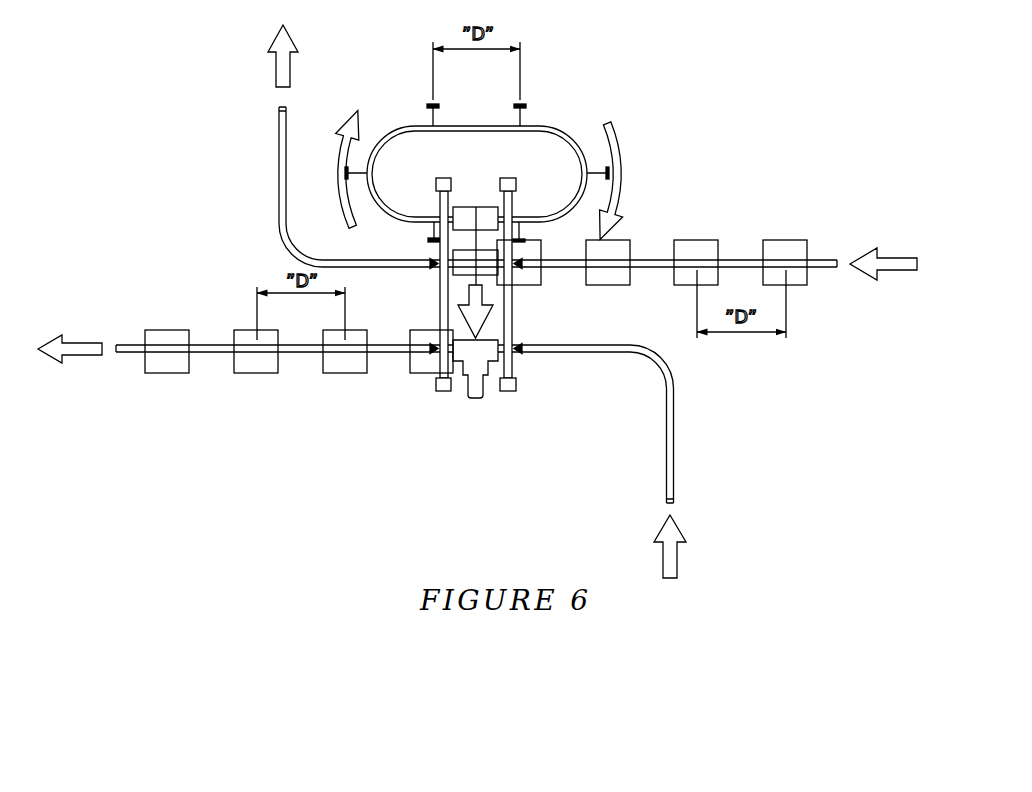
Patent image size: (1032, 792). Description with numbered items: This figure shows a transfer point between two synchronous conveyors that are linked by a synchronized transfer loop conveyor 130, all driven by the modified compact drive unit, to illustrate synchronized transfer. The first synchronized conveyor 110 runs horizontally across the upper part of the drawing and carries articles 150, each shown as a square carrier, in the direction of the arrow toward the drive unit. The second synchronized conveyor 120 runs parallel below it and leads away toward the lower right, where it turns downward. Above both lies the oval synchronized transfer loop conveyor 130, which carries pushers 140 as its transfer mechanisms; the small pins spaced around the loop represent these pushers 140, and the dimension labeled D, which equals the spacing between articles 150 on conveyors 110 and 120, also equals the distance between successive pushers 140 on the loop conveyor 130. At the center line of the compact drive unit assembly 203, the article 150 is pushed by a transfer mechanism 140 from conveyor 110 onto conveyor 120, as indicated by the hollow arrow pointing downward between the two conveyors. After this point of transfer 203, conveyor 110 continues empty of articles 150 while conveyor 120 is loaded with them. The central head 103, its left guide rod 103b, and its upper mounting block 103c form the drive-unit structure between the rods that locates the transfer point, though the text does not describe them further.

The applicator head / nozzle 103 is at (490, 367).
The left guide rod 103b is at (447, 281).
The upper mounting block 103c is at (488, 206).
The synchronized conveyor 110 is at (823, 258).
The synchronized conveyor 120 is at (680, 440).
The synchronized transfer loop conveyor 130 is at (557, 123).
The pusher 140 is at (523, 101).
The article 150 is at (705, 240).
The compact drive unit assembly center line 203 is at (513, 302).